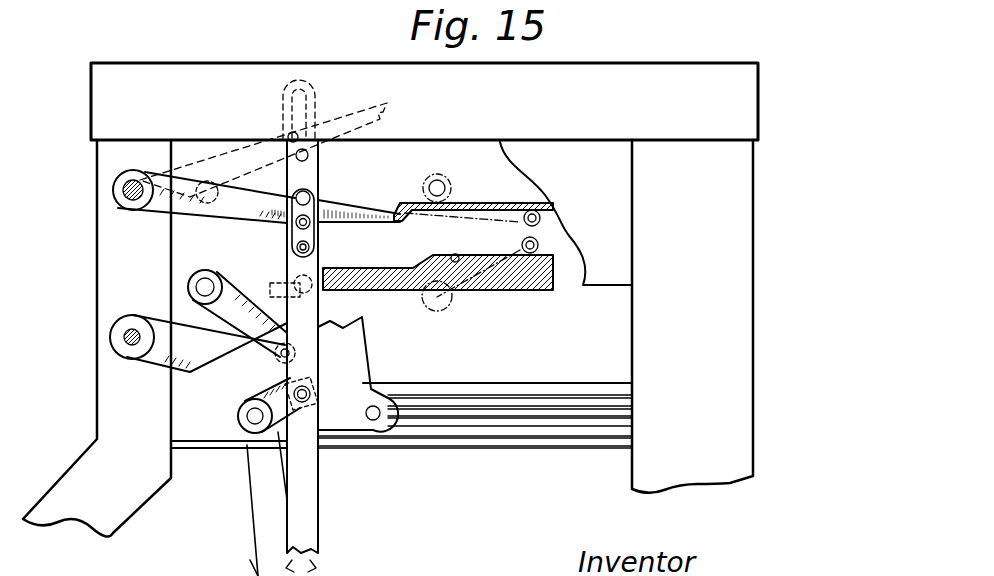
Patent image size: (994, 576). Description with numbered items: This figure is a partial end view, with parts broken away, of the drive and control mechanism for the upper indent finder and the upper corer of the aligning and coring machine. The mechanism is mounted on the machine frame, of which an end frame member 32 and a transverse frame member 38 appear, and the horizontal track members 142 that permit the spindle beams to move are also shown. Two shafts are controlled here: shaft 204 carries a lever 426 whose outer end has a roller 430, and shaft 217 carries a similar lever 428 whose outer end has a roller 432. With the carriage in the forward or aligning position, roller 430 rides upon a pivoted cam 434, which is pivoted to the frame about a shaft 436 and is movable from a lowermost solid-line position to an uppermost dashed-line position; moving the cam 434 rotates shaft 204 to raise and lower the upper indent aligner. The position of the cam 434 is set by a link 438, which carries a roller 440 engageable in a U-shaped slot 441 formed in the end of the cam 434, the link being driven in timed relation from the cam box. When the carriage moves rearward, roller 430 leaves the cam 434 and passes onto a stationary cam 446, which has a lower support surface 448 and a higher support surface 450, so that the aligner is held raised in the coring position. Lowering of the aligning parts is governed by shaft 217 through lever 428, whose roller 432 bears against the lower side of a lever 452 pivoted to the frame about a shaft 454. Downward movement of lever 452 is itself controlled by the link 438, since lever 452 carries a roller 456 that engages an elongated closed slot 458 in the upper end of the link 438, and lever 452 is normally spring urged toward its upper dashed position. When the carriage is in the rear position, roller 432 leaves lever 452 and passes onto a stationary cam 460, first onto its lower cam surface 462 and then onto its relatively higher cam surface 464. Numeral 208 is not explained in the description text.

The transverse frame member 38 is at (605, 80).
The end frame member 32 is at (740, 215).
The track member 142 is at (548, 390).
The link 438 is at (283, 102).
The elongated closed slot 458 is at (302, 90).
The lever 452 is at (150, 180).
The shaft 454 is at (123, 190).
The shaft 217 is at (165, 213).
The roller 456 is at (316, 168).
The first cam surface 462 is at (405, 226).
The stationary cam 460 is at (462, 202).
The first support surface 448 is at (353, 268).
The stationary cam 446 is at (403, 282).
The roller 432 is at (585, 190).
The second cam surface 464 is at (540, 231).
The second support surface 450 is at (455, 256).
The lever 428 is at (487, 193).
The roller 430 is at (173, 380).
The lever 426 is at (292, 278).
The shaft 204 is at (200, 287).
The shaft 436 is at (112, 328).
The pivoted cam 434 is at (268, 290).
The U-shaped slot 441 is at (263, 430).
The lever 208 is at (263, 566).
The roller 440 is at (372, 380).